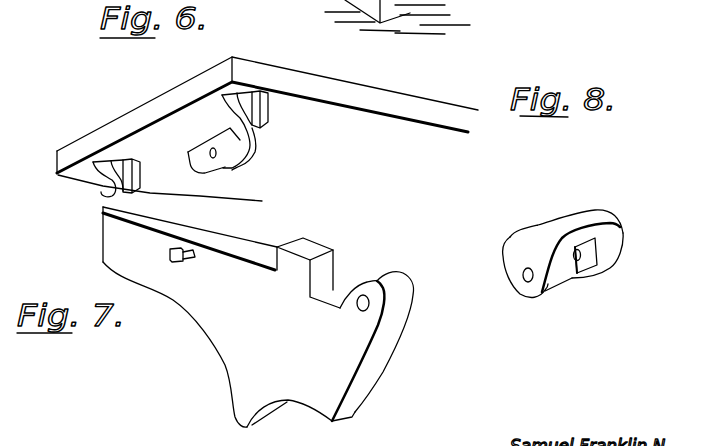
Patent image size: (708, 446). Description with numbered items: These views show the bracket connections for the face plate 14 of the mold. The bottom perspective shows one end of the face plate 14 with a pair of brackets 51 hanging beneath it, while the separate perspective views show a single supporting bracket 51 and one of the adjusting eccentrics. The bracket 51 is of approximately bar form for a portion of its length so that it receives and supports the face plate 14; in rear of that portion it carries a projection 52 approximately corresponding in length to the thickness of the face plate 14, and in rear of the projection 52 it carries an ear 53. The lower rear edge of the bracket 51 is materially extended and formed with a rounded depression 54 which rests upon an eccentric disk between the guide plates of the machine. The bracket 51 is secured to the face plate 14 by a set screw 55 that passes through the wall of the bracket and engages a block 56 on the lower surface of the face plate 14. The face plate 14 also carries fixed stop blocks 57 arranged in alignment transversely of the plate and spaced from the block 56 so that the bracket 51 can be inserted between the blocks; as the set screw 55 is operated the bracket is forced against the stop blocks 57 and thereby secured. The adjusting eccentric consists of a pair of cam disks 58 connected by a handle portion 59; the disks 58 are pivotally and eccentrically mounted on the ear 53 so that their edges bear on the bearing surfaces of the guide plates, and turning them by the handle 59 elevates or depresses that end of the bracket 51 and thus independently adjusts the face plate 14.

In FIG. 6, the face plate 14 is at (299, 80).
In FIG. 7, the bracket 51 is at (212, 313).
In FIG. 7, the projection 52 is at (314, 250).
In FIG. 7, the ear 53 is at (392, 282).
In FIG. 7, the rounded depression 54 is at (281, 401).
In FIG. 7, the set screw 55 is at (187, 261).
In FIG. 6, the block 56 is at (220, 138).
In FIG. 6, the fixed stop blocks 57 is at (132, 174).
In FIG. 8, the cam disks 58 is at (517, 238).
In FIG. 8, the handle portion 59 is at (598, 210).